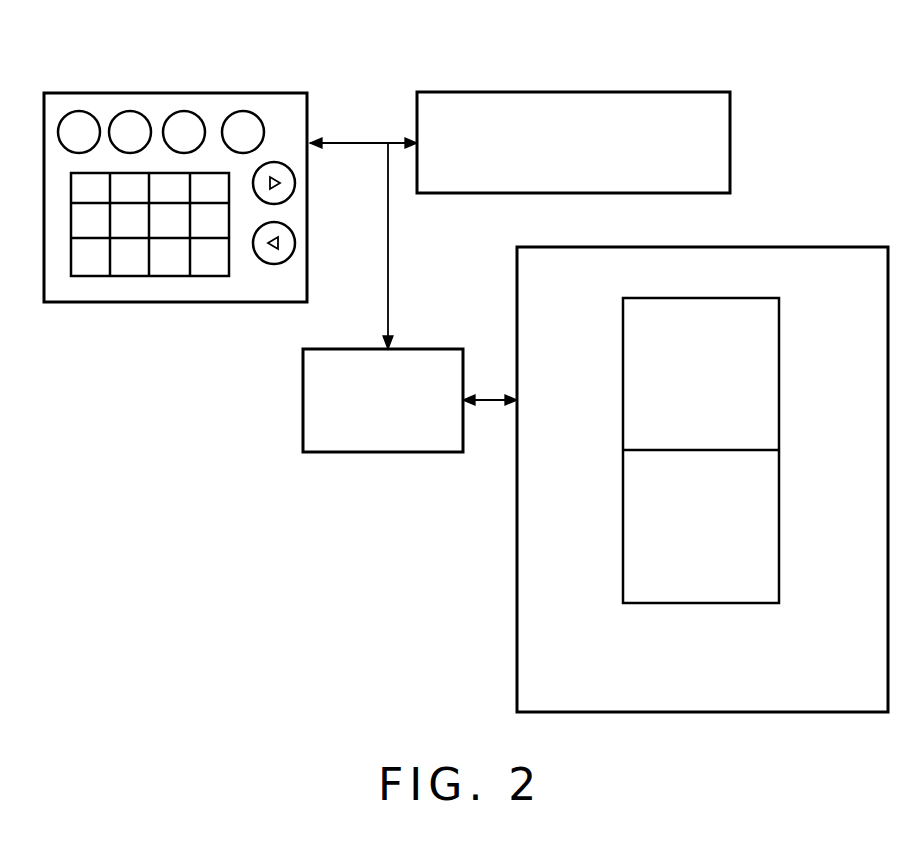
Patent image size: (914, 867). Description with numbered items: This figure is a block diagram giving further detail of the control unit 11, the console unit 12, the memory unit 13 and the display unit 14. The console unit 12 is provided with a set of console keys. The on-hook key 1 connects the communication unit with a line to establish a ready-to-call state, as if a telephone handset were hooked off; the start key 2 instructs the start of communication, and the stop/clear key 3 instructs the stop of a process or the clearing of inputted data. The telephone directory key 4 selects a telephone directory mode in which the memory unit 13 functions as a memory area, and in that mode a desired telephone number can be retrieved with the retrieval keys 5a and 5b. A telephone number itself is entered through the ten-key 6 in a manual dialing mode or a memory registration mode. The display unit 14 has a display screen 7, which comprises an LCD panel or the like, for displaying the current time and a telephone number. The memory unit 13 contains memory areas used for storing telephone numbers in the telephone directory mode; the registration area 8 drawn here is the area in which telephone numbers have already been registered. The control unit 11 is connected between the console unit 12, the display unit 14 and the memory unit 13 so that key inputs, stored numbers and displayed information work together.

The on-hook key 1 is at (75, 128).
The start key 2 is at (127, 128).
The stop/clear key 3 is at (182, 128).
The telephone directory key 4 is at (243, 128).
The retrieval key 5a is at (295, 185).
The retrieval key 5b is at (295, 245).
The ten-key 6 is at (83, 277).
The display screen 7 is at (475, 112).
The registration area 8 is at (727, 318).
The control unit 11 is at (410, 349).
The console unit 12 is at (135, 302).
The memory unit 13 is at (842, 712).
The display unit 14 is at (498, 194).